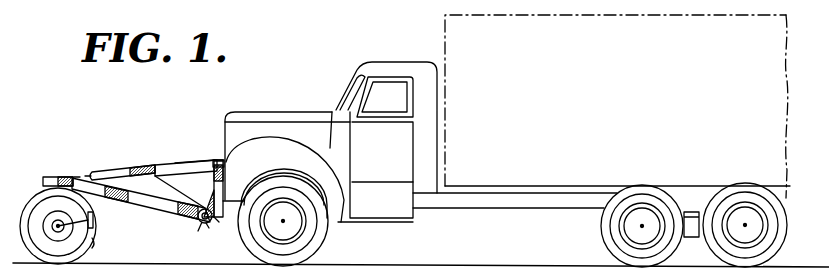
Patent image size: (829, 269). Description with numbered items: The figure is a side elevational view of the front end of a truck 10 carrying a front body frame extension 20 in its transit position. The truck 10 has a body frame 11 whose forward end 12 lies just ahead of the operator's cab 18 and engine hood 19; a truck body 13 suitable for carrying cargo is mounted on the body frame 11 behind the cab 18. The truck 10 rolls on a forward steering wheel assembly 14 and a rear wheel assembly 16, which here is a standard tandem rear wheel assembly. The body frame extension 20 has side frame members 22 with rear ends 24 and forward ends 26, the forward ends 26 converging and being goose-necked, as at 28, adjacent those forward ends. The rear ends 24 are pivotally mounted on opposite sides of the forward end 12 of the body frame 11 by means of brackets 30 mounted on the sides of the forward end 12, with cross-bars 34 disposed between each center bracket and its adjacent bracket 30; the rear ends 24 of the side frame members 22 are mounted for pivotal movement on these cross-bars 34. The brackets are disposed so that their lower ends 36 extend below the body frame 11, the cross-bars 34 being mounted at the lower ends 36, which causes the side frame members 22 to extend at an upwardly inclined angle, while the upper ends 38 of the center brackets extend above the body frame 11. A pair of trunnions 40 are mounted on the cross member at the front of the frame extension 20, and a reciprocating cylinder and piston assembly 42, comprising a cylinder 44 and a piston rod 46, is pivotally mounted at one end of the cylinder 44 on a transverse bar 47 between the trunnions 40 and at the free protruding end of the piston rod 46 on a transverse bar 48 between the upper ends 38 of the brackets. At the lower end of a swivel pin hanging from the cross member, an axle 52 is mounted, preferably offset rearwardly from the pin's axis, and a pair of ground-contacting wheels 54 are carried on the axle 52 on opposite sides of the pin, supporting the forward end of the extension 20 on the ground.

The truck 10 is at (316, 72).
The body frame 11 is at (510, 209).
The forward end 12 is at (212, 197).
The truck body 13 is at (624, 93).
The forward steering wheel assembly 14 is at (335, 237).
The rear wheel assembly 16 is at (695, 211).
The operator's cab 18 is at (401, 42).
The engine hood 19 is at (268, 110).
The body frame extension 20 is at (151, 214).
The side frame members 22 is at (143, 193).
The rear ends 24 is at (199, 223).
The forward ends 26 is at (44, 182).
The goose-neck 28 is at (71, 175).
The brackets 30 is at (209, 219).
The cross-bars 34 is at (208, 224).
The lower ends 36 is at (219, 223).
The upper ends 38 is at (215, 161).
The trunnions 40 is at (77, 176).
The reciprocating cylinder and piston assembly 42 is at (167, 162).
The cylinder 44 is at (135, 168).
The piston rod 46 is at (183, 162).
The transverse bar 47 is at (87, 175).
The transverse member or bar 48 is at (223, 163).
The axle 52 is at (72, 226).
The ground-contacting wheels 54 is at (93, 243).